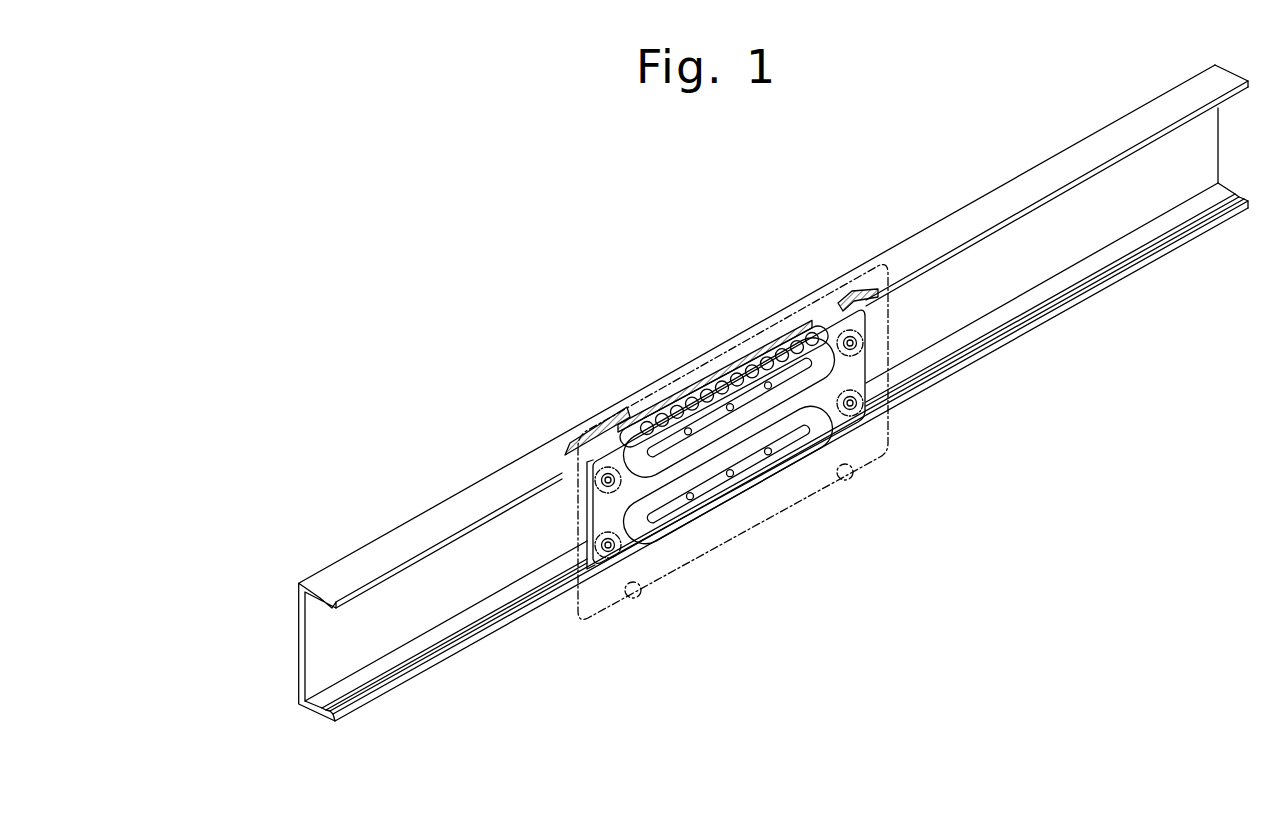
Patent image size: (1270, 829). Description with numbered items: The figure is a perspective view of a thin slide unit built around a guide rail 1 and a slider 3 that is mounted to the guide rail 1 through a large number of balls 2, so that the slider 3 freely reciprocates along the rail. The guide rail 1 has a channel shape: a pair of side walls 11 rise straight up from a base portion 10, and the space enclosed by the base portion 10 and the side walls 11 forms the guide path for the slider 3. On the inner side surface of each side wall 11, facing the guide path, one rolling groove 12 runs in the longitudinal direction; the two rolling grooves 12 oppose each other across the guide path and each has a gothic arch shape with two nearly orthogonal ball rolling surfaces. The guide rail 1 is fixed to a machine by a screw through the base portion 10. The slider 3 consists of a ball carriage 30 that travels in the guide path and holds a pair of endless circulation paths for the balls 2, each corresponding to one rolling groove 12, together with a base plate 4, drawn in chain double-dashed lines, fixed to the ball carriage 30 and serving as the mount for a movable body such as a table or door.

The guide rail 1 is at (994, 167).
The base portion 10 is at (298, 598).
The side walls 11 is at (455, 508).
The rolling groove 12 is at (1066, 288).
The balls 2 is at (700, 392).
The slider 3 is at (788, 550).
The ball carriage 30 is at (840, 338).
The base plate 4 is at (863, 480).